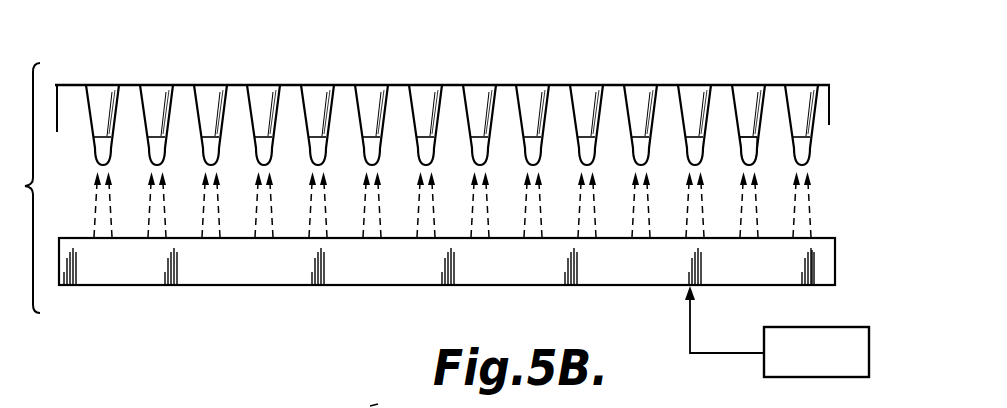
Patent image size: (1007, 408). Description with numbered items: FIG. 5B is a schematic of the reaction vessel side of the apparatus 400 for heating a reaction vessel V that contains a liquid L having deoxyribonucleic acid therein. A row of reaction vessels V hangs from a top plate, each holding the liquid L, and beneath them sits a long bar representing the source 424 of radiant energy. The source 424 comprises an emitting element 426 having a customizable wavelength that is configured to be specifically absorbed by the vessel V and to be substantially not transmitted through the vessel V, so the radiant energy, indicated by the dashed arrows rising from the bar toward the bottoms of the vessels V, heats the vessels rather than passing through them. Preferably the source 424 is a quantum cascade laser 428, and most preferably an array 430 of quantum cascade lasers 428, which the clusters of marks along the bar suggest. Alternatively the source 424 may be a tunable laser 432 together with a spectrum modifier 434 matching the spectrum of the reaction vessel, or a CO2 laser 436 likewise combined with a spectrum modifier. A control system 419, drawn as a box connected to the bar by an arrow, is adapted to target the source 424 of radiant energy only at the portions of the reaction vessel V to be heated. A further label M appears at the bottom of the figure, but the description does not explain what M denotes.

The apparatus 400 is at (447, 83).
The reaction vessel V is at (743, 97).
The liquid L is at (741, 140).
The source of radiant energy 424 is at (447, 303).
The emitting element 426 is at (171, 266).
The quantum cascade laser 428 is at (318, 266).
The array of quantum cascade lasers 430 is at (448, 266).
The tunable laser 432 is at (571, 266).
The spectrum modifier 434 is at (695, 266).
The CO2 laser 436 is at (808, 266).
The control system 419 is at (786, 355).
The motor M is at (325, 398).